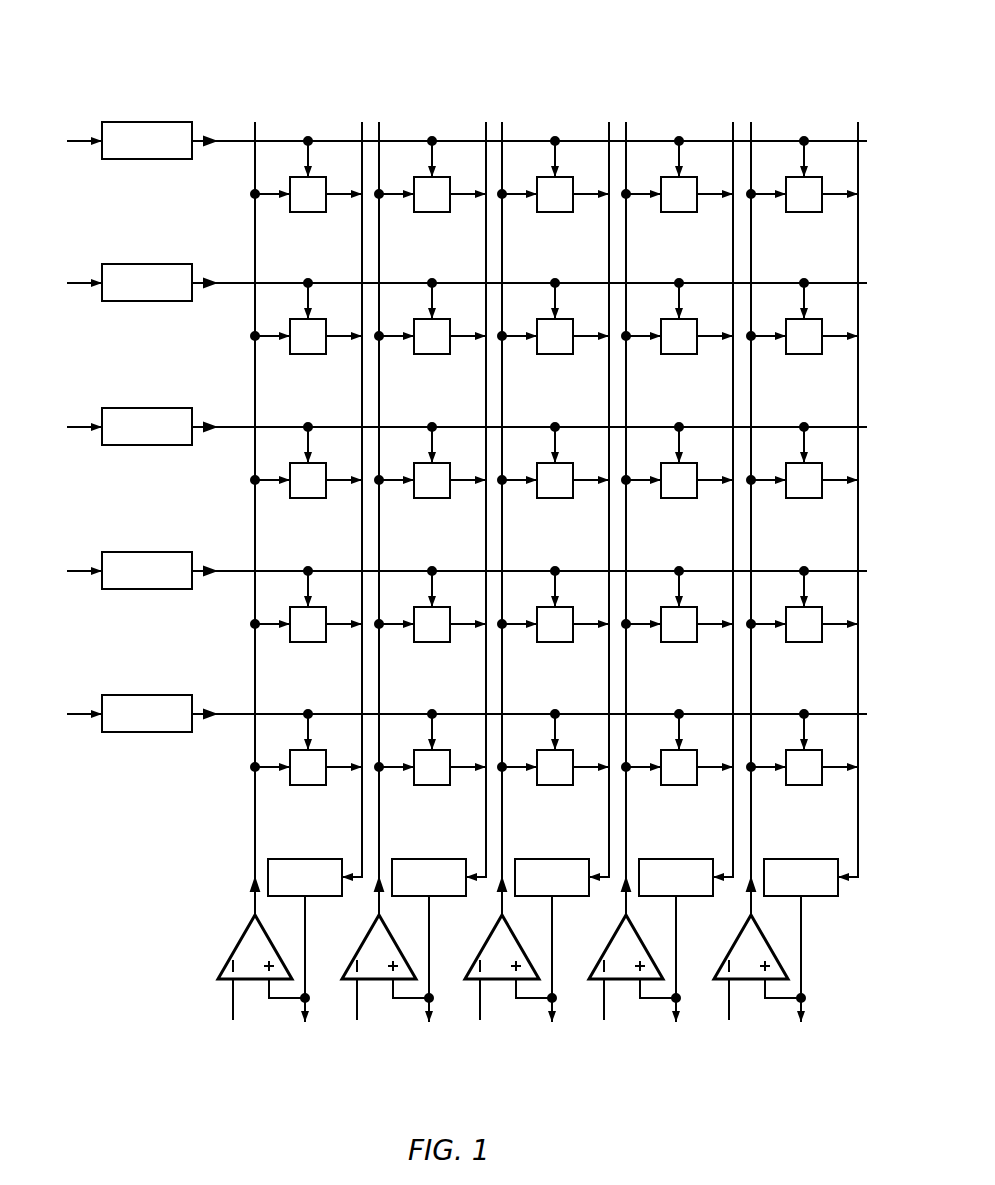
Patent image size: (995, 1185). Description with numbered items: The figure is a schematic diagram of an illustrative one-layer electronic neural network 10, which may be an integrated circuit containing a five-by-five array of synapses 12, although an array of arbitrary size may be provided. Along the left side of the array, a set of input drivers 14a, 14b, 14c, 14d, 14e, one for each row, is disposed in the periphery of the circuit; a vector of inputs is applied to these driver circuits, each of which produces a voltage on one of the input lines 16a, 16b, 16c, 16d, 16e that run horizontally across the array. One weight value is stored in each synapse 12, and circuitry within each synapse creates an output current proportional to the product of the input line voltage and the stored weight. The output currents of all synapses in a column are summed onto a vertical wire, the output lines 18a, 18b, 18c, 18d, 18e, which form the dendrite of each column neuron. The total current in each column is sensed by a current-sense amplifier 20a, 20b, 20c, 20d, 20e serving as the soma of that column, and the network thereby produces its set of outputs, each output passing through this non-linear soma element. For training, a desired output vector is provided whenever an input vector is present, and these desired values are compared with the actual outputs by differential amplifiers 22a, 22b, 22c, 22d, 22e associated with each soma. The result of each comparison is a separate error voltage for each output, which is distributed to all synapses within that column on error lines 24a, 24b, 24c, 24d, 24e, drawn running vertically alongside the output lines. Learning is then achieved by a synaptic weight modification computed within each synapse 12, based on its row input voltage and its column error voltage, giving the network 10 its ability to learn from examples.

The neural network 10 is at (552, 50).
The synapse 12 is at (554, 476).
The input driver 14a is at (136, 123).
The input driver 14b is at (136, 265).
The input driver 14c is at (136, 409).
The input driver 14d is at (136, 553).
The input driver 14e is at (136, 696).
The input line 16a is at (529, 116).
The input line 16b is at (529, 258).
The input line 16c is at (529, 402).
The input line 16d is at (529, 546).
The input line 16e is at (529, 689).
The output line 18a is at (348, 480).
The output line 18b is at (472, 480).
The output line 18c is at (594, 480).
The output line 18d is at (719, 480).
The output line 18e is at (844, 480).
The current-sense amplifier 20a is at (305, 915).
The current-sense amplifier 20b is at (429, 915).
The current-sense amplifier 20c is at (552, 915).
The current-sense amplifier 20d is at (676, 915).
The current-sense amplifier 20e is at (801, 915).
The differential amplifier 22a is at (254, 976).
The differential amplifier 22b is at (378, 976).
The differential amplifier 22c is at (501, 976).
The differential amplifier 22d is at (625, 976).
The differential amplifier 22e is at (750, 976).
The error line 24a is at (271, 499).
The error line 24b is at (395, 499).
The error line 24c is at (517, 499).
The error line 24d is at (642, 499).
The error line 24e is at (767, 499).